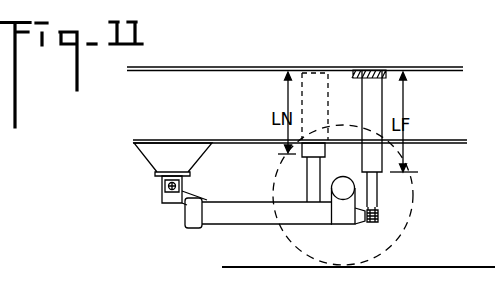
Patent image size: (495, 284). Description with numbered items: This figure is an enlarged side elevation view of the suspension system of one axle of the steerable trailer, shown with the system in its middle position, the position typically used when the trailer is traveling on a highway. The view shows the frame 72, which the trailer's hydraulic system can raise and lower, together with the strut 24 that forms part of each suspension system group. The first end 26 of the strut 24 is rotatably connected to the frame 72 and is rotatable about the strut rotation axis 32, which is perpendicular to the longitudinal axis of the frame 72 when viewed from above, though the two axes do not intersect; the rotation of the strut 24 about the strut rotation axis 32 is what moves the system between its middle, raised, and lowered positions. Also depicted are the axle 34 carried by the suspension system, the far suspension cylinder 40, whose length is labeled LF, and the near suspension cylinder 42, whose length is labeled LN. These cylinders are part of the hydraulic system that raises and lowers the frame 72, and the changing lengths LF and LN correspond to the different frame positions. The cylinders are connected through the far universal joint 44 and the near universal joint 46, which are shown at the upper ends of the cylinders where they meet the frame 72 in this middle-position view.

The frame 72 is at (198, 66).
The near universal joint 46 is at (313, 75).
The far universal joint 44 is at (377, 72).
The far suspension cylinder 40 is at (368, 102).
The near suspension cylinder 42 is at (323, 128).
The axle 34 is at (338, 187).
The strut 24 is at (250, 215).
The first end 26 is at (178, 212).
The strut rotation axis 32 is at (172, 196).